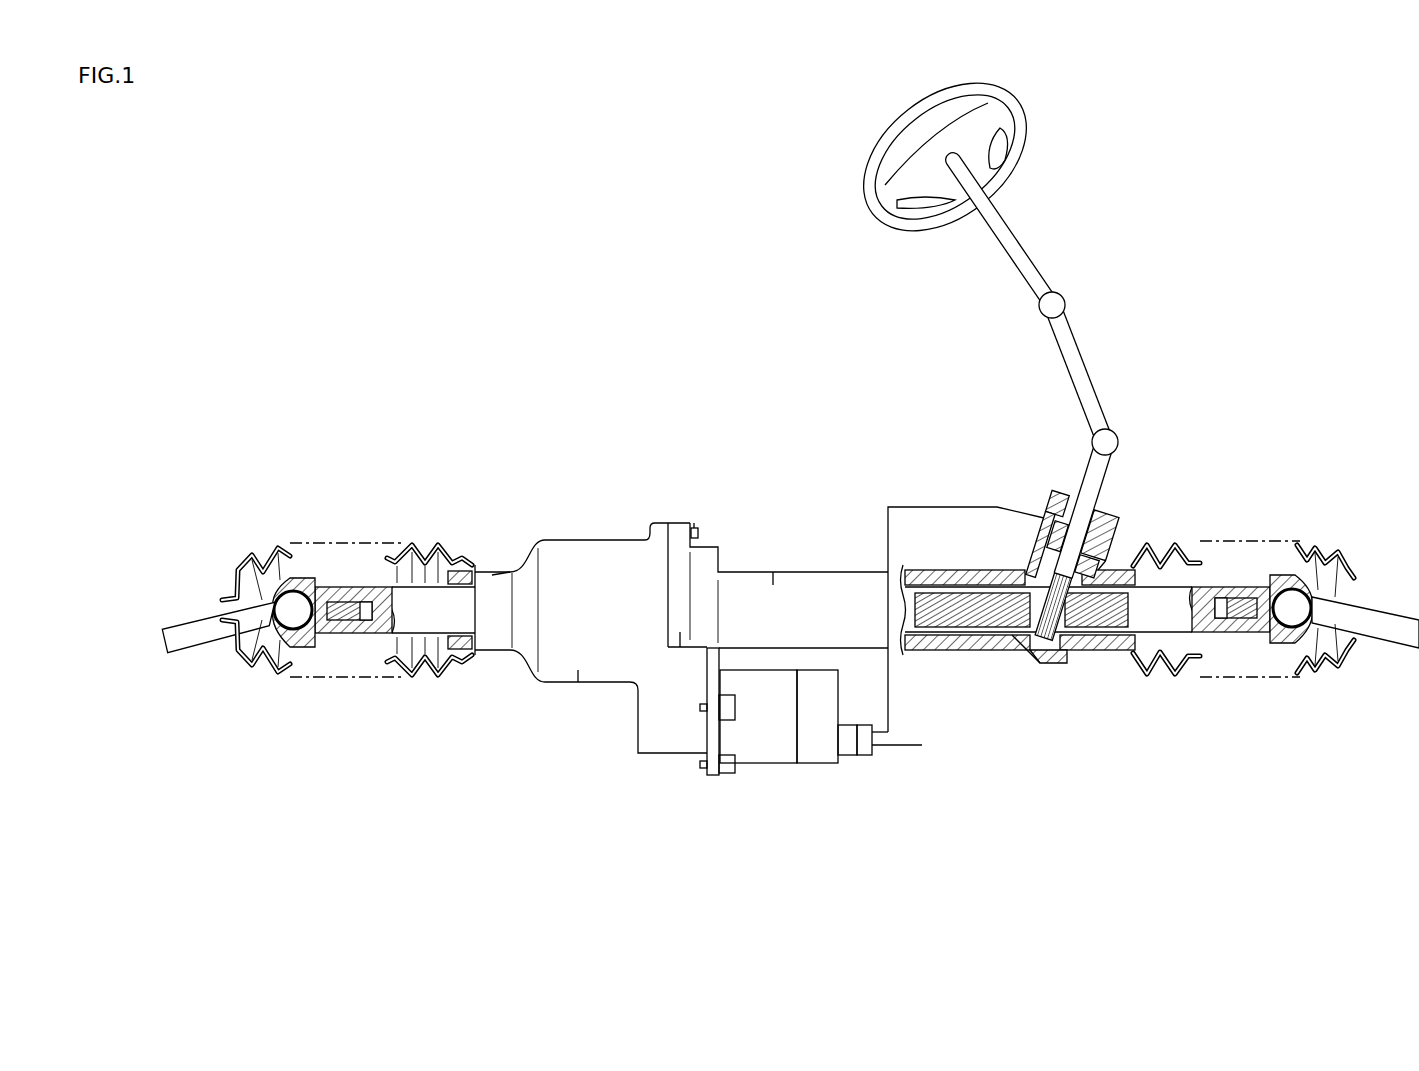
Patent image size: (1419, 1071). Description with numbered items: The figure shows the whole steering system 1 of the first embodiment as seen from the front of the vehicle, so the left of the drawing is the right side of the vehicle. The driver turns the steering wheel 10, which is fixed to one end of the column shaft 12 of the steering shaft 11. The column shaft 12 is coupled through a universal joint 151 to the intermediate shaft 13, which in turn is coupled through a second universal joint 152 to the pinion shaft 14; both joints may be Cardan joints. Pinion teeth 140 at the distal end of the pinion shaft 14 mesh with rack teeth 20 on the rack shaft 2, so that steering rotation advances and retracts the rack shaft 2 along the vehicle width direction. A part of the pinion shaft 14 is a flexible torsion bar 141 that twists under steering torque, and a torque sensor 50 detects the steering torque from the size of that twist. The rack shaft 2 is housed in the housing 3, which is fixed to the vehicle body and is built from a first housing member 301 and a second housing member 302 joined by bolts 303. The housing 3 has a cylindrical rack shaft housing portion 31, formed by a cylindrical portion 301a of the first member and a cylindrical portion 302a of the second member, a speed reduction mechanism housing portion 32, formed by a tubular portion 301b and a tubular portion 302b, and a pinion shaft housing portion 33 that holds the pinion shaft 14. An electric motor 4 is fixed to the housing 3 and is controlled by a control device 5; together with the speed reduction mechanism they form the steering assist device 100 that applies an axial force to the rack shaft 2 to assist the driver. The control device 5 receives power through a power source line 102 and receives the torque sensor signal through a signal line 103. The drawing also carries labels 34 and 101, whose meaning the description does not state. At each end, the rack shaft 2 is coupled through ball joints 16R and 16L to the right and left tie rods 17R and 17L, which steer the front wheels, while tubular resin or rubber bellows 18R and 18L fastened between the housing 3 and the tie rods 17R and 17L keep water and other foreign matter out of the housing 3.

The steering system 1 is at (1177, 220).
The steering wheel 10 is at (1017, 103).
The steering shaft 11 is at (980, 315).
The column shaft 12 is at (1033, 293).
The intermediate shaft 13 is at (1070, 387).
The pinion shaft 14 is at (1087, 485).
The universal joint 151 is at (1042, 315).
The universal joint 152 is at (1093, 440).
The pinion teeth 140 is at (1040, 645).
The torsion bar 141 is at (1048, 522).
The torque sensor 50 is at (1048, 532).
The pinion shaft housing portion 33 is at (1115, 515).
The rack teeth 20 is at (1078, 627).
The rack shaft 2 is at (1160, 583).
The housing 3 is at (798, 498).
The first housing member 301 is at (612, 538).
The second housing member 302 is at (847, 568).
The bolts 303 is at (694, 526).
The rack shaft housing portion 31 is at (582, 430).
The cylindrical portion 301a is at (492, 575).
The cylindrical portion 302a is at (773, 585).
The speed reduction mechanism housing portion 32 is at (510, 710).
The tubular portion 301b is at (578, 670).
The tubular portion 302b is at (680, 632).
The bolts 34 is at (700, 708).
The signal line 103 is at (888, 685).
The steering assist device 100 is at (847, 780).
The motor unit 101 is at (755, 808).
The power source line 102 is at (916, 735).
The electric motor 4 is at (757, 757).
The control device 5 is at (817, 755).
The ball joint 16R is at (265, 570).
The ball joint 16L is at (1323, 588).
The tie rod 17R is at (190, 640).
The tie rod 17L is at (1372, 633).
The bellows 18R is at (232, 573).
The bellows 18L is at (1353, 570).